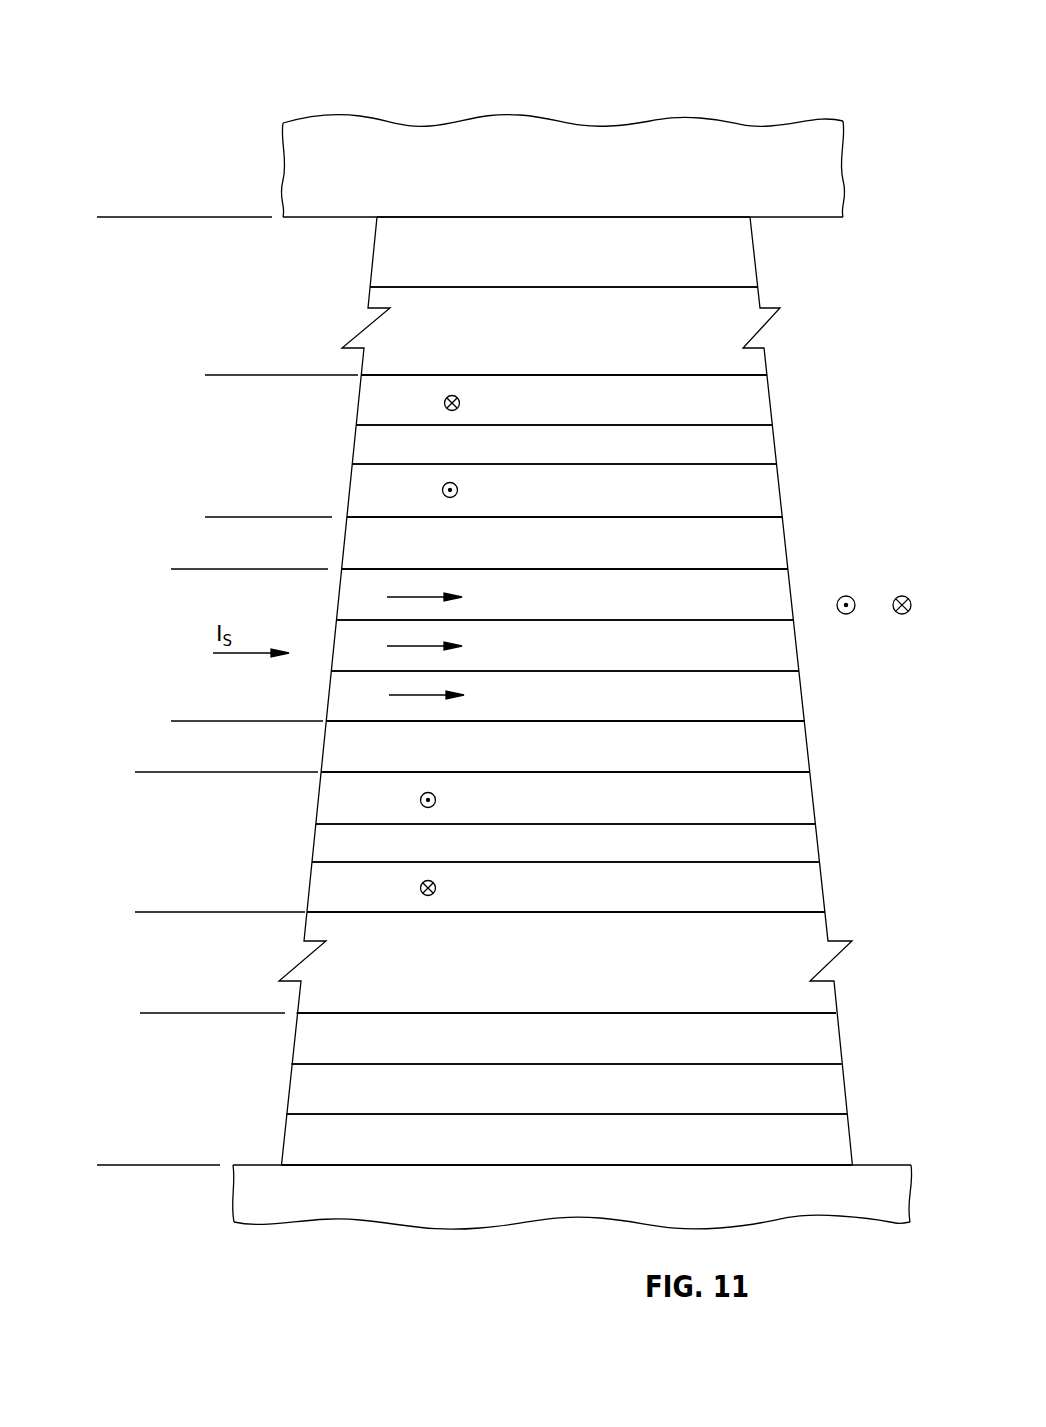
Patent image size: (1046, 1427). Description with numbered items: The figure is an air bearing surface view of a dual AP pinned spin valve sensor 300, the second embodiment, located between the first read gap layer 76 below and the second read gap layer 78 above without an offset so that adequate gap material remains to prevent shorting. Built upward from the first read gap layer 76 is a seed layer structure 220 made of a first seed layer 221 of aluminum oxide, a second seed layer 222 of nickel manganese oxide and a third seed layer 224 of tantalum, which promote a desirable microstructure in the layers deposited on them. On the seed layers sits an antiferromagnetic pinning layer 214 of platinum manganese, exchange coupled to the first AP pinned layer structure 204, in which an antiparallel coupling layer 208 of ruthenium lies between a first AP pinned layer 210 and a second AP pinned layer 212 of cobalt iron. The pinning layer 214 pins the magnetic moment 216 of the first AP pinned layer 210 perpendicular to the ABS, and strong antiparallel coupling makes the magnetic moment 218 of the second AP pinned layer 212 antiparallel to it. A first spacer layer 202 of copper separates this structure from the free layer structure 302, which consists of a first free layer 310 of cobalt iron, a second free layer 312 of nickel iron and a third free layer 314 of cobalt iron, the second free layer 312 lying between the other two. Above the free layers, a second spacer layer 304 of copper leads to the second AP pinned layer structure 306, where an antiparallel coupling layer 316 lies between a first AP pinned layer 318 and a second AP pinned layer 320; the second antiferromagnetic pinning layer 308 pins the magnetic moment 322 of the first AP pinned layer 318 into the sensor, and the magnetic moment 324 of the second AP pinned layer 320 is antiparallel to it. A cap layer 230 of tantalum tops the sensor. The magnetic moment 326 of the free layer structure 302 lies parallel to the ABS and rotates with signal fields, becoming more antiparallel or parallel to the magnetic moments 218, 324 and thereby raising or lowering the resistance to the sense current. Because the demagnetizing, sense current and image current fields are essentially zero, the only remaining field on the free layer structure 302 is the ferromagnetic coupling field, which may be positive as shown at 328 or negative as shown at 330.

The second read gap layer 78 is at (838, 153).
The first read gap layer 76 is at (870, 1213).
The dual AP pinned spin valve sensor 300 is at (105, 217).
The cap layer 230 is at (724, 266).
The second antiferromagnetic pinning layer 308 is at (737, 346).
The second AP pinned layer structure 306 is at (214, 517).
The first AP pinned layer 318 is at (747, 416).
The magnetic moment 322 is at (444, 403).
The antiparallel coupling layer 316 is at (755, 459).
The second AP pinned layer 320 is at (764, 505).
The magnetic moment 324 is at (442, 490).
The second spacer layer 304 is at (764, 557).
The free layer structure 302 is at (178, 721).
The third free layer 314 is at (764, 609).
The second free layer 312 is at (764, 660).
The first free layer 310 is at (764, 710).
The magnetic moment 326 is at (400, 645).
The first spacer layer 202 is at (764, 761).
The first AP pinned layer structure 204 is at (143, 912).
The second AP pinned layer 212 is at (764, 812).
The magnetic moment 218 is at (420, 800).
The antiparallel coupling layer 208 is at (764, 857).
The first AP pinned layer 210 is at (764, 901).
The magnetic moment 216 is at (420, 888).
The antiferromagnetic pinning layer 214 is at (766, 979).
The seed layer structure 220 is at (151, 1013).
The third seed layer 224 is at (766, 1052).
The second seed layer 222 is at (766, 1102).
The first seed layer 221 is at (766, 1156).
The positive ferromagnetic coupling field 328 is at (846, 614).
The negative ferromagnetic coupling field 330 is at (902, 614).